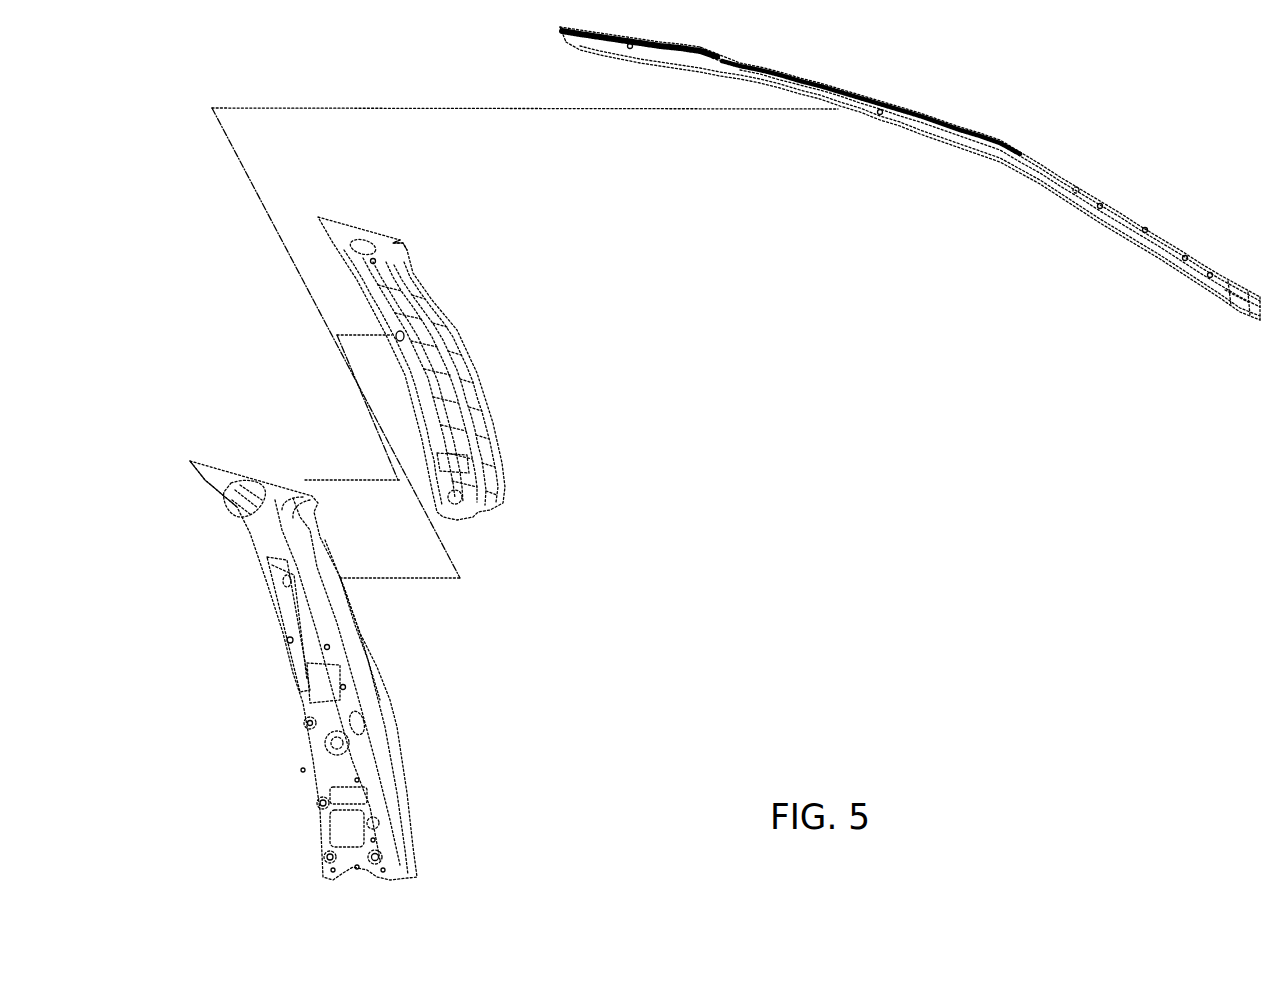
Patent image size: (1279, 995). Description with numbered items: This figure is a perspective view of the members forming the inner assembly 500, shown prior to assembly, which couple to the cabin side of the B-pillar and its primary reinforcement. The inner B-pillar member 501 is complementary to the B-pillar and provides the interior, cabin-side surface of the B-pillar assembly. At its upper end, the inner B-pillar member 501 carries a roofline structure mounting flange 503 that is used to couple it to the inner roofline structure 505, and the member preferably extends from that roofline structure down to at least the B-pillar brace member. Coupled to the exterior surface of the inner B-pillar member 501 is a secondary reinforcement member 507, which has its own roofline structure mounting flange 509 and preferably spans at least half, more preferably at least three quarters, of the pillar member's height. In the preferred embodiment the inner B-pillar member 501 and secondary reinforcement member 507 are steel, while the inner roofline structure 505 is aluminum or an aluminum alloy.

The inner assembly 500 is at (768, 489).
The inner B-pillar member 501 is at (366, 694).
The roofline structure mounting flange 503 is at (200, 467).
The inner roofline structure 505 is at (1022, 170).
The secondary reinforcement member 507 is at (428, 397).
The roofline structure mounting flange 509 is at (404, 239).